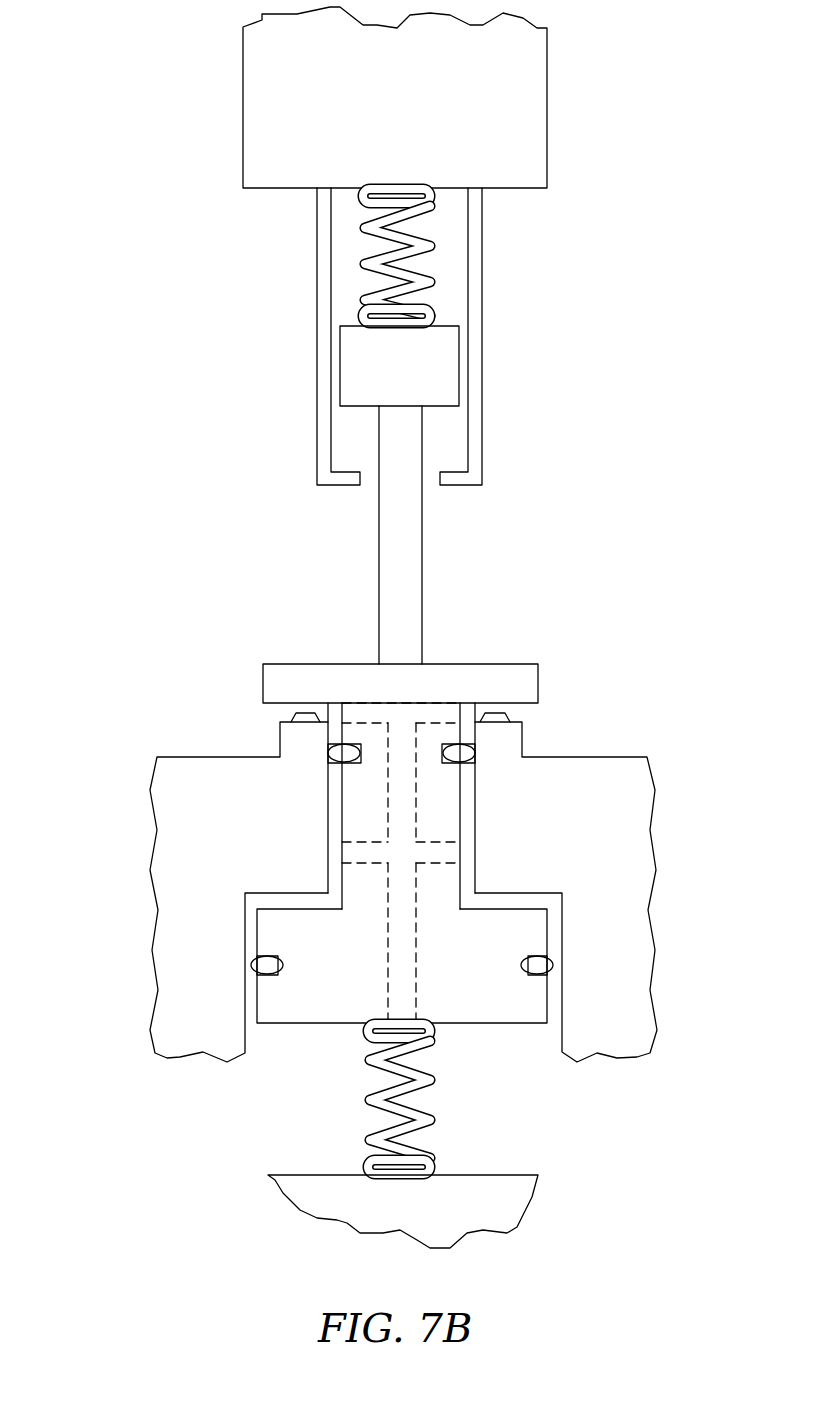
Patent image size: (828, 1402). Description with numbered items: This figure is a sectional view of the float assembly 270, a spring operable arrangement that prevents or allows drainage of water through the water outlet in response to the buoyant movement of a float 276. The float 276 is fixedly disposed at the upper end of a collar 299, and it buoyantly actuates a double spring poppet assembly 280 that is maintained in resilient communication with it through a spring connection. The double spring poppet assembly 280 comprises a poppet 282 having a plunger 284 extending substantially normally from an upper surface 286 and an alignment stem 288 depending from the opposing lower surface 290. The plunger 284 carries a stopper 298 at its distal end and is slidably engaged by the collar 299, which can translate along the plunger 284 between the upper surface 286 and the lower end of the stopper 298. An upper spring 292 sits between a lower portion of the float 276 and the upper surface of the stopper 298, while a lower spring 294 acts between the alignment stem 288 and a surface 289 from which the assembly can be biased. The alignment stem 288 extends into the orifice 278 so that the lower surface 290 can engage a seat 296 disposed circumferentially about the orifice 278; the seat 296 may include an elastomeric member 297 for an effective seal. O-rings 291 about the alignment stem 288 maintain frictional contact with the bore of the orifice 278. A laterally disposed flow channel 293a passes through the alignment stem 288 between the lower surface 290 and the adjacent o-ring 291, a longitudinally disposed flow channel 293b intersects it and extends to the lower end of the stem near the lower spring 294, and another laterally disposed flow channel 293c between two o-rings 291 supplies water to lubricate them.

The float assembly 270 is at (672, 233).
The float 276 is at (548, 130).
The orifice 278 is at (333, 815).
The double spring poppet assembly 280 is at (160, 188).
The poppet 282 is at (540, 673).
The plunger 284 is at (423, 545).
The upper surface 286 is at (487, 663).
The alignment stem 288 is at (462, 855).
The surface 289 is at (528, 1197).
The lower surface 290 is at (290, 713).
The o-rings 291 is at (342, 755).
The upper spring 292 is at (432, 258).
The laterally disposed flow channel 293a is at (396, 711).
The longitudinally disposed flow channel 293b is at (413, 812).
The laterally disposed flow channel 293c is at (362, 861).
The lower spring 294 is at (431, 1072).
The seat 296 is at (278, 750).
The elastomeric member 297 is at (292, 715).
The stopper 298 is at (448, 358).
The collar 299 is at (483, 432).